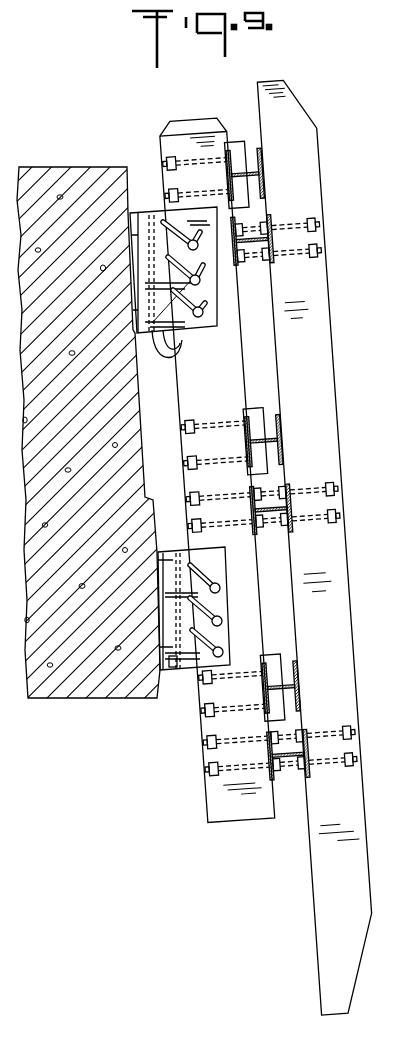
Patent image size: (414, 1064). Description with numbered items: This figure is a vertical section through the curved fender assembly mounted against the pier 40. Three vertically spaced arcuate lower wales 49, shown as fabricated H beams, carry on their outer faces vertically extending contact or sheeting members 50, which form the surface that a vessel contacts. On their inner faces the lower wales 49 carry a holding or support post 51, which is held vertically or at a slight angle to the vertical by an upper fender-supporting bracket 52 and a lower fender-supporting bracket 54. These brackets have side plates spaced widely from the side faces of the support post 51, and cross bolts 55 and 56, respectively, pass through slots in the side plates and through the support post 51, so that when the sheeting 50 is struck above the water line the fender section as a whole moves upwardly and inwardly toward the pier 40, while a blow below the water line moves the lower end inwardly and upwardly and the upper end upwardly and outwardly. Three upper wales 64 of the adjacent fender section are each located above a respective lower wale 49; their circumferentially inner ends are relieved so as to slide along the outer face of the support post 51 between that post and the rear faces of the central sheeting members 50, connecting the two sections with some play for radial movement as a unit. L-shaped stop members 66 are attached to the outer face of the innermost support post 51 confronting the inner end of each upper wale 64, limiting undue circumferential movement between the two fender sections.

The pier 40 is at (78, 150).
The lower wales 49 is at (250, 258).
The contact or sheeting members 50 is at (318, 332).
The support post 51 is at (190, 388).
The upper fender-supporting bracket 52 is at (141, 207).
The lower fender-supporting bracket 54 is at (182, 680).
The cross bolt 55 is at (178, 357).
The cross bolt 56 is at (234, 648).
The upper wales 64 is at (247, 178).
The L-shaped stop member 66 is at (238, 142).